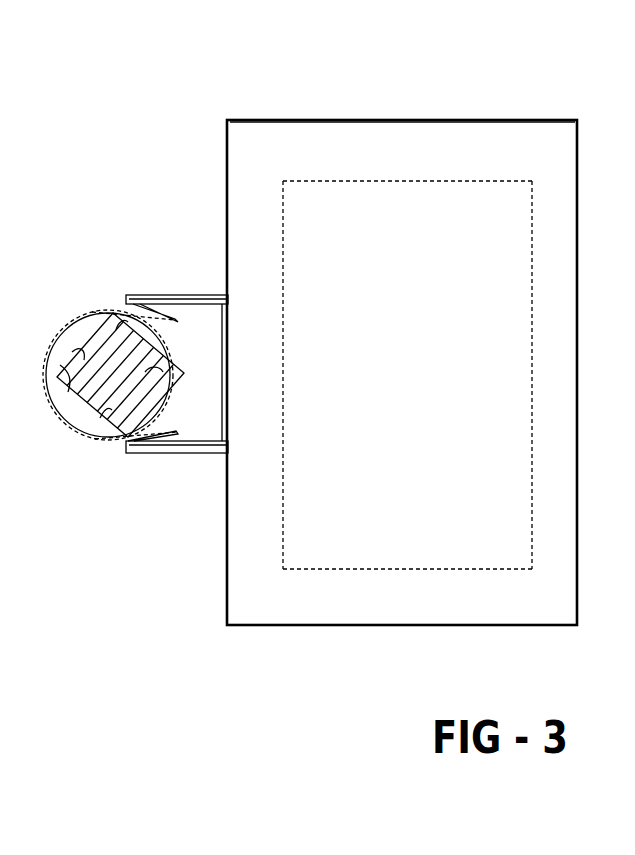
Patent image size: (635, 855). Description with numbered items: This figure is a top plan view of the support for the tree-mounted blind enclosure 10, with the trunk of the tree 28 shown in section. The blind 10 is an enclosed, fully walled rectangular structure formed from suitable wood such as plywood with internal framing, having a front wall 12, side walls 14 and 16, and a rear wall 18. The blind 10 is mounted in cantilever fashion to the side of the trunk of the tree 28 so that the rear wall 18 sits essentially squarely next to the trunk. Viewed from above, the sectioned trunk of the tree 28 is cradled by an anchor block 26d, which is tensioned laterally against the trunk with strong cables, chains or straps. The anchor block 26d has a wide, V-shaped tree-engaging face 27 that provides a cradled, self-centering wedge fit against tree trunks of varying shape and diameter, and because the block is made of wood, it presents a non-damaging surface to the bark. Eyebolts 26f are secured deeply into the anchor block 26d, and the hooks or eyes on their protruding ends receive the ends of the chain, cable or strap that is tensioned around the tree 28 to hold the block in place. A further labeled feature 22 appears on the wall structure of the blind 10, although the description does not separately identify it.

The tree-mounted blind enclosure 10 is at (506, 88).
The front wall 12 is at (533, 372).
The side wall 14 is at (412, 570).
The side wall 16 is at (428, 181).
The rear wall 18 is at (283, 549).
The front wall 22 is at (298, 158).
The upper anchor block 26d is at (212, 322).
The eyebolts 26f is at (169, 320).
The V-shaped tree-engaging face 27 is at (132, 312).
The tree 28 is at (62, 330).